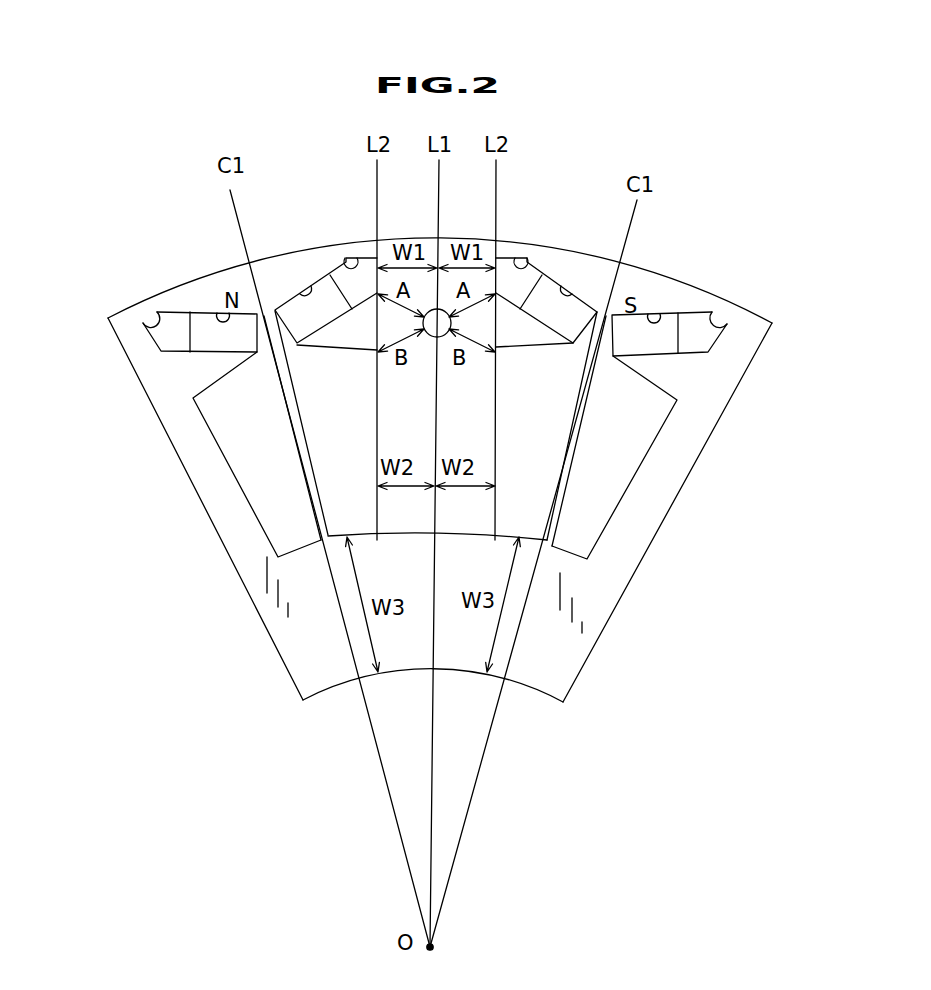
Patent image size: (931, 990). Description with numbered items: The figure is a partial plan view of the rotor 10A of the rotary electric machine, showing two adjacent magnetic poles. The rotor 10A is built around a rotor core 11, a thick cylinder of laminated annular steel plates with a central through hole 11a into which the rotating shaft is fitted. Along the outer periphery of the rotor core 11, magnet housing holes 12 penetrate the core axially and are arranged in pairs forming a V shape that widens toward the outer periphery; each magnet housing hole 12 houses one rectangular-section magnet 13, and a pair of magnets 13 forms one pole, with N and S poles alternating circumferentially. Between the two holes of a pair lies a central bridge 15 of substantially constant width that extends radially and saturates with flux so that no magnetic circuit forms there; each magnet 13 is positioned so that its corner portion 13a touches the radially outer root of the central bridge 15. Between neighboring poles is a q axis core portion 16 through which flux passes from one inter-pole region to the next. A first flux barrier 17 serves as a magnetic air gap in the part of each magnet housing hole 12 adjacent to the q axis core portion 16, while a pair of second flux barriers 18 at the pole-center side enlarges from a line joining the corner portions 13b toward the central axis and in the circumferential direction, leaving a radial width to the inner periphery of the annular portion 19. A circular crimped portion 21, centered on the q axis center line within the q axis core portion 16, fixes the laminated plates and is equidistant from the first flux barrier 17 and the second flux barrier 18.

The rotor 10A is at (132, 224).
The rotor core 11 is at (640, 578).
The through hole 11a is at (342, 688).
The magnet housing hole 12 is at (205, 325).
The magnet 13 is at (200, 327).
The corner portion 13a is at (654, 316).
The corner portion 13b is at (258, 356).
The central bridge 15 is at (295, 443).
The q axis core portion 16 is at (475, 439).
The first flux barrier 17 is at (145, 316).
The second flux barrier 18 is at (289, 498).
The annular portion 19 is at (296, 637).
The crimped portion 21 is at (432, 338).